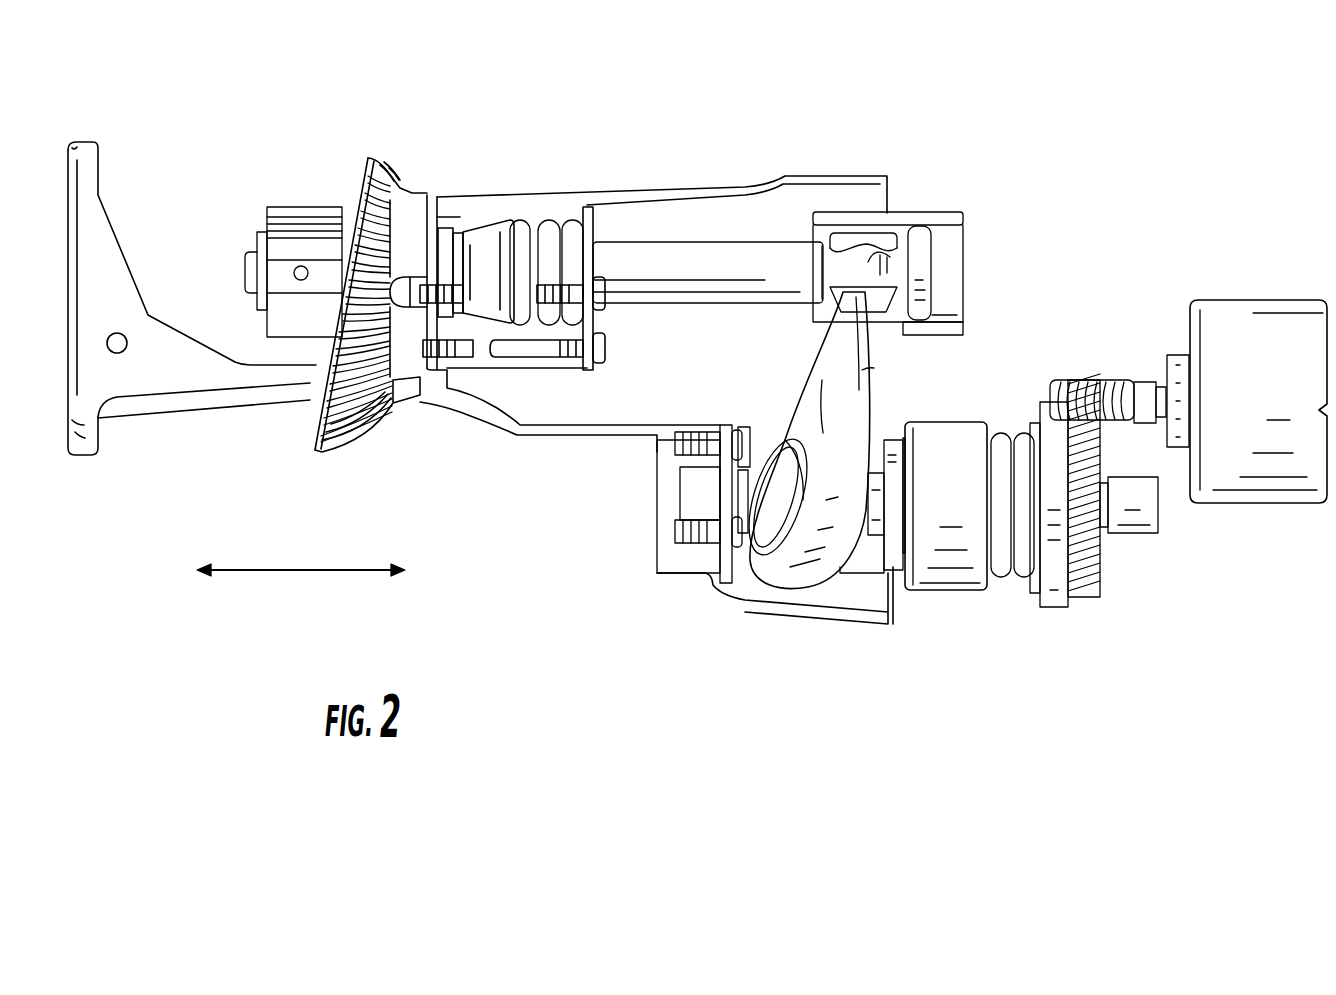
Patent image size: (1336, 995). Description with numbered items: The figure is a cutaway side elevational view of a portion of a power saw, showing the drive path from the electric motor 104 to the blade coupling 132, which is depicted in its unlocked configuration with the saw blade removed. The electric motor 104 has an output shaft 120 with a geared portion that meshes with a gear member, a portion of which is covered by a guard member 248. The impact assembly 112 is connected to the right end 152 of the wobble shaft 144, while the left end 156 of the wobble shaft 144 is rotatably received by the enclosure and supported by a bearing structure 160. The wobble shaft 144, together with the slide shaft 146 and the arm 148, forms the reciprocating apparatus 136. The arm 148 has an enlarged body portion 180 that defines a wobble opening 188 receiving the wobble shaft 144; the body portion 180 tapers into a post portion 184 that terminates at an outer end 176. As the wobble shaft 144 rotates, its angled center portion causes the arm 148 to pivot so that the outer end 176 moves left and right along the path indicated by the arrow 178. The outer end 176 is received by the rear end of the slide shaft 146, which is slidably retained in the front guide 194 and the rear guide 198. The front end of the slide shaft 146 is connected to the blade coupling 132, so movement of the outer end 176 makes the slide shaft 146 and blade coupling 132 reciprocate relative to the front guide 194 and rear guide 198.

The electric motor 104 is at (1297, 342).
The impact assembly 112 is at (946, 614).
The output shaft 120 is at (1107, 393).
The blade coupling 132 is at (307, 208).
The reciprocating apparatus 136 is at (722, 379).
The wobble shaft 144 is at (768, 517).
The slide shaft 146 is at (686, 268).
The arm 148 is at (852, 377).
The right end 152 is at (873, 520).
The left end 156 is at (740, 497).
The bearing structure 160 is at (698, 490).
The outer end 176 is at (862, 293).
The arrow 178 is at (322, 570).
The body portion 180 is at (822, 380).
The post portion 184 is at (785, 440).
The wobble opening 188 is at (783, 440).
The front guide 194 is at (534, 260).
The rear guide 198 is at (912, 220).
The guard member 248 is at (1052, 575).